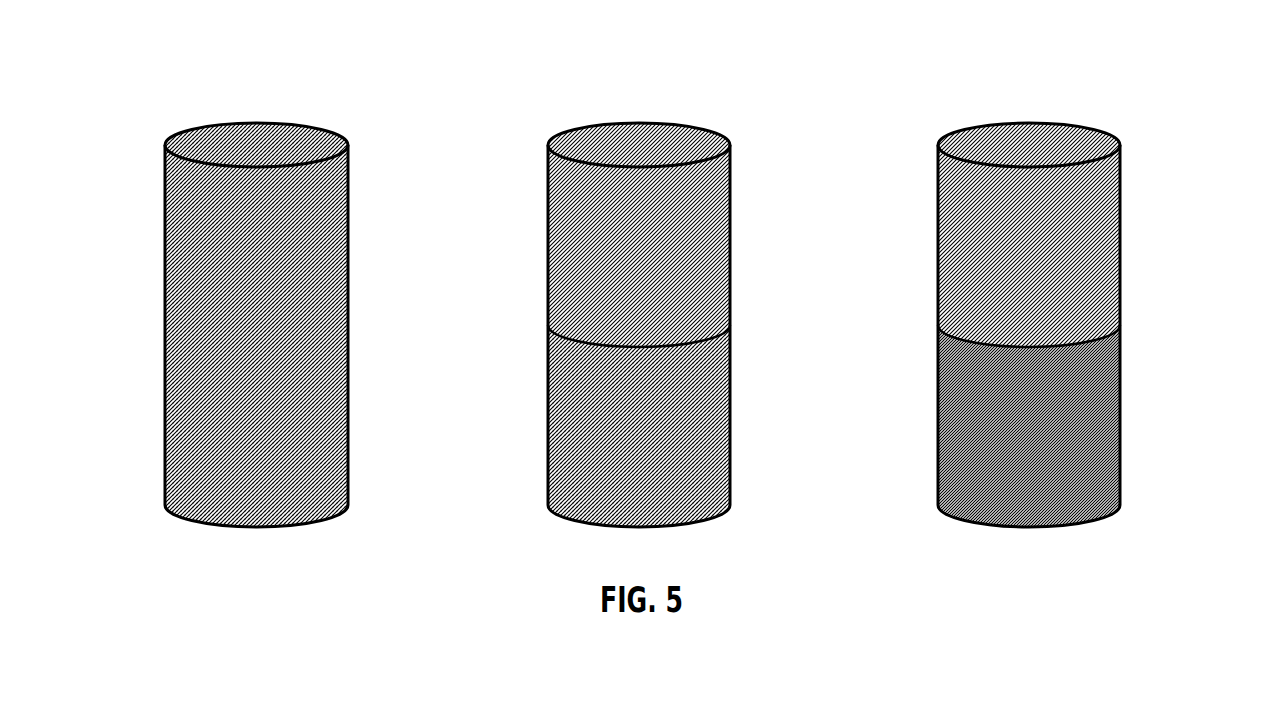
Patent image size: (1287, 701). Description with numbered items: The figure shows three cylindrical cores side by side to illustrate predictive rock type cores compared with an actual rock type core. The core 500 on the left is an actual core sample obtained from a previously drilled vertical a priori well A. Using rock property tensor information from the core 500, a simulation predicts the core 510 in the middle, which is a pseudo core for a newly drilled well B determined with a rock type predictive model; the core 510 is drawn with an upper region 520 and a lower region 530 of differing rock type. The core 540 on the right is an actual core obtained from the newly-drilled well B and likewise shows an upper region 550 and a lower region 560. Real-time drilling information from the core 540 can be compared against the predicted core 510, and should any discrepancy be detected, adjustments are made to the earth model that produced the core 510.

The core 500 is at (313, 87).
The core 510 is at (696, 87).
The upper region 520 is at (757, 237).
The lower region 530 is at (757, 417).
The core 540 is at (1086, 87).
The upper region 550 is at (1147, 237).
The treated lower region 560 is at (1147, 417).